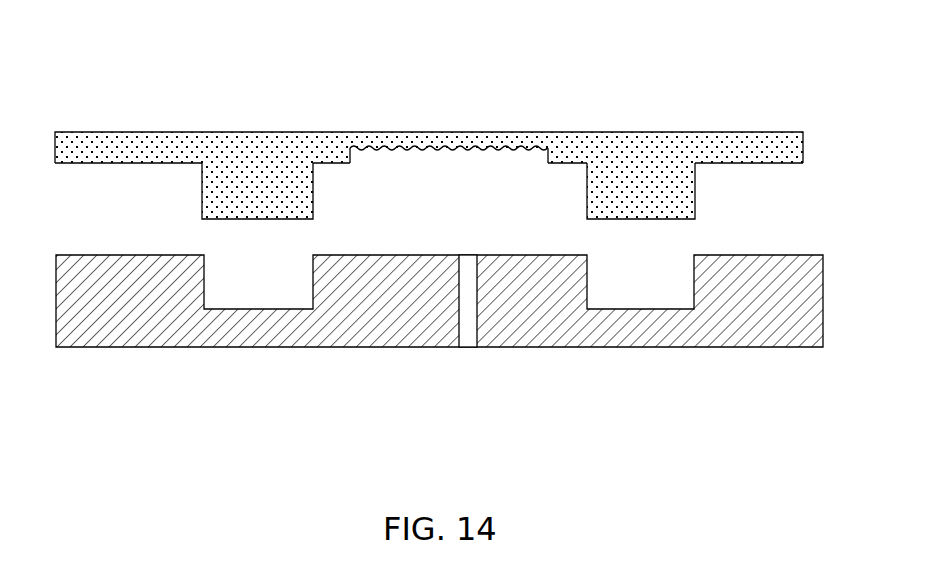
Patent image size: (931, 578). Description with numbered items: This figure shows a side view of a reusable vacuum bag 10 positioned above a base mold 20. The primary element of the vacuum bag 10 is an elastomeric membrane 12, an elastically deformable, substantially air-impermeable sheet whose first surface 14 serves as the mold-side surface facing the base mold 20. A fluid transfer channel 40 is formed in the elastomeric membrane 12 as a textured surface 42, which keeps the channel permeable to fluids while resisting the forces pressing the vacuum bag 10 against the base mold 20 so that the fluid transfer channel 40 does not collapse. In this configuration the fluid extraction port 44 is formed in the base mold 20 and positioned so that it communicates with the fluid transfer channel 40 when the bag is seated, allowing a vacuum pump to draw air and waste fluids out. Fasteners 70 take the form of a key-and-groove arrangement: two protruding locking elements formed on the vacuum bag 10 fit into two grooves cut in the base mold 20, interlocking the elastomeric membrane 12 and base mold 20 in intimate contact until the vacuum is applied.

The reusable vacuum bag 10 is at (146, 75).
The elastomeric membrane 12 is at (320, 132).
The first surface 14 is at (782, 164).
The base mold 20 is at (356, 333).
The fluid transfer channel 40 is at (478, 175).
The textured surface 42 is at (407, 149).
The fluid extraction port 44 is at (468, 335).
The fastener 70 is at (314, 199).